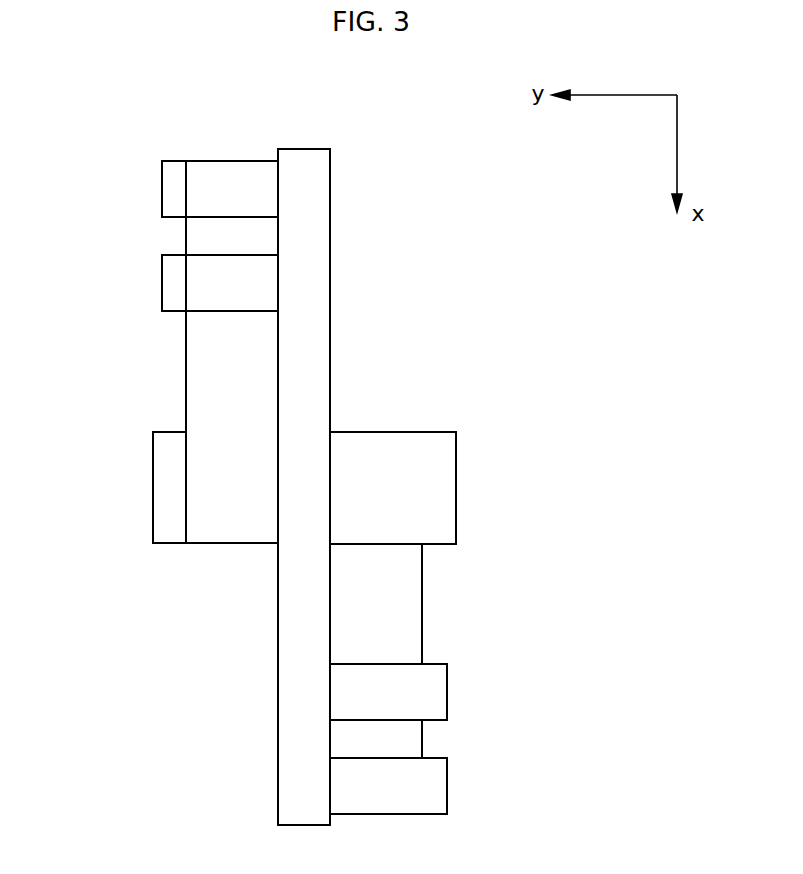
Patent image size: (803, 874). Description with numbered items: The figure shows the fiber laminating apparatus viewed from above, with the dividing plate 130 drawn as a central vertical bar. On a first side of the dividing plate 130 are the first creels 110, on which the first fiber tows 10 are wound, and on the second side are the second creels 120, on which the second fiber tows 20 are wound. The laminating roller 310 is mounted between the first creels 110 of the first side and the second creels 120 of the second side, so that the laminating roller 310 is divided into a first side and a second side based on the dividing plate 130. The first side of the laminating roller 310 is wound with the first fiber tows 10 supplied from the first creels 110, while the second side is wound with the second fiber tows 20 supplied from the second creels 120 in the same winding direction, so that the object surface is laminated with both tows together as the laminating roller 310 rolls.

The first fiber tows 10 is at (200, 368).
The second fiber tows 20 is at (408, 615).
The first creels 110 is at (193, 168).
The second creels 120 is at (432, 788).
The dividing plate 130 is at (308, 165).
The laminating roller 310 is at (171, 492).